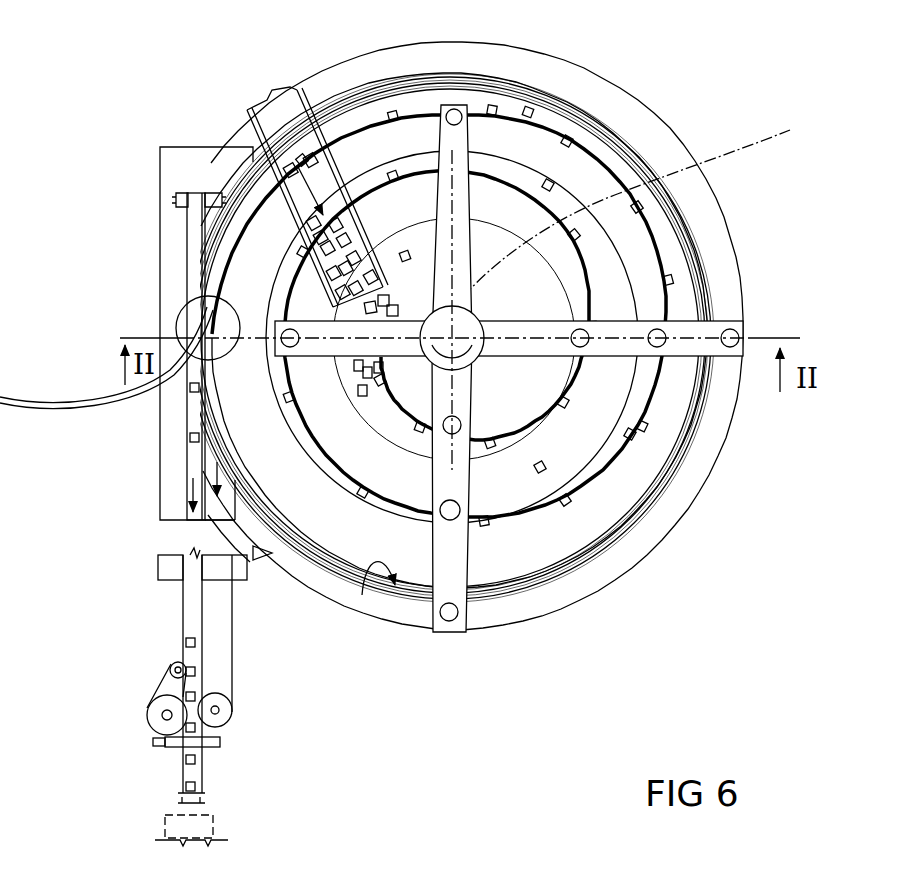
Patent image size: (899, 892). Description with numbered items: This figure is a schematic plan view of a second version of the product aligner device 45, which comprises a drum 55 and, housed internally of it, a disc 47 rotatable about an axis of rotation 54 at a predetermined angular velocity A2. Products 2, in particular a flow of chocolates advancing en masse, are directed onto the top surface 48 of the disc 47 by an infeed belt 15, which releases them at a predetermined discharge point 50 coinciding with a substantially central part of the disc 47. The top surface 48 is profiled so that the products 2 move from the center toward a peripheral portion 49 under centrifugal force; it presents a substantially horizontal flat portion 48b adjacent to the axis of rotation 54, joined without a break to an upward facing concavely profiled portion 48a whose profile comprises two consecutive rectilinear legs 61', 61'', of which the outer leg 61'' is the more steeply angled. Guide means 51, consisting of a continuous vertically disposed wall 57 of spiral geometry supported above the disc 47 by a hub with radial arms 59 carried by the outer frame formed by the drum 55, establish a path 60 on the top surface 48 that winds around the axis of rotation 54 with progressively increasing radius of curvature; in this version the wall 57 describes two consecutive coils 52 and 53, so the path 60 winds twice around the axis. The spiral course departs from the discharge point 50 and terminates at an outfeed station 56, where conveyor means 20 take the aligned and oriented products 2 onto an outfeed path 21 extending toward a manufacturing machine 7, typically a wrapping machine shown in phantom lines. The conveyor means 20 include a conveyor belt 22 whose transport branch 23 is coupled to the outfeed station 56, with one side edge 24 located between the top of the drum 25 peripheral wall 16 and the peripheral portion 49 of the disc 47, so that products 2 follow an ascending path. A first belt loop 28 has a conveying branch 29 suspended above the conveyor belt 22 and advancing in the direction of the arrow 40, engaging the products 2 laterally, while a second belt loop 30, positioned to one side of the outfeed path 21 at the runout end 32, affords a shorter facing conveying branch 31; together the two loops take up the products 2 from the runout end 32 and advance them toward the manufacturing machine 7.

The products 2 is at (528, 107).
The manufacturing machine 7 is at (213, 823).
The infeed belt 15 is at (276, 116).
The peripheral wall 16 is at (366, 600).
The conveyor means 20 is at (178, 252).
The outfeed path 21 is at (200, 520).
The conveyor belt 22 is at (302, 415).
The transport branch 23 is at (200, 215).
The side edge 24 is at (190, 570).
The drum 25 is at (483, 602).
The first belt loop 28 is at (243, 662).
The conveying branch 29 is at (190, 423).
The second belt loop 30 is at (148, 705).
The conveying branch 31 is at (155, 690).
The runout end 32 is at (183, 745).
The arrow 40 is at (262, 537).
The product aligner device 45 is at (724, 113).
The disc 47 is at (652, 372).
The top surface 48 is at (540, 467).
The concavely profiled portion 48a is at (548, 185).
The flat portion 48b is at (405, 256).
The peripheral portion 49 is at (630, 166).
The discharge point 50 is at (360, 313).
The guide means 51 is at (490, 174).
The coil 52 is at (583, 383).
The coil 53 is at (230, 290).
The axis of rotation 54 is at (640, 205).
The drum 55 is at (630, 563).
The outfeed station 56 is at (243, 233).
The continuous wall 57 is at (590, 283).
The radial arms 59 is at (443, 573).
The path 60 is at (622, 302).
The rectilinear leg 61' is at (450, 299).
The rectilinear leg 61'' is at (450, 405).
The angular velocity A2 is at (474, 302).